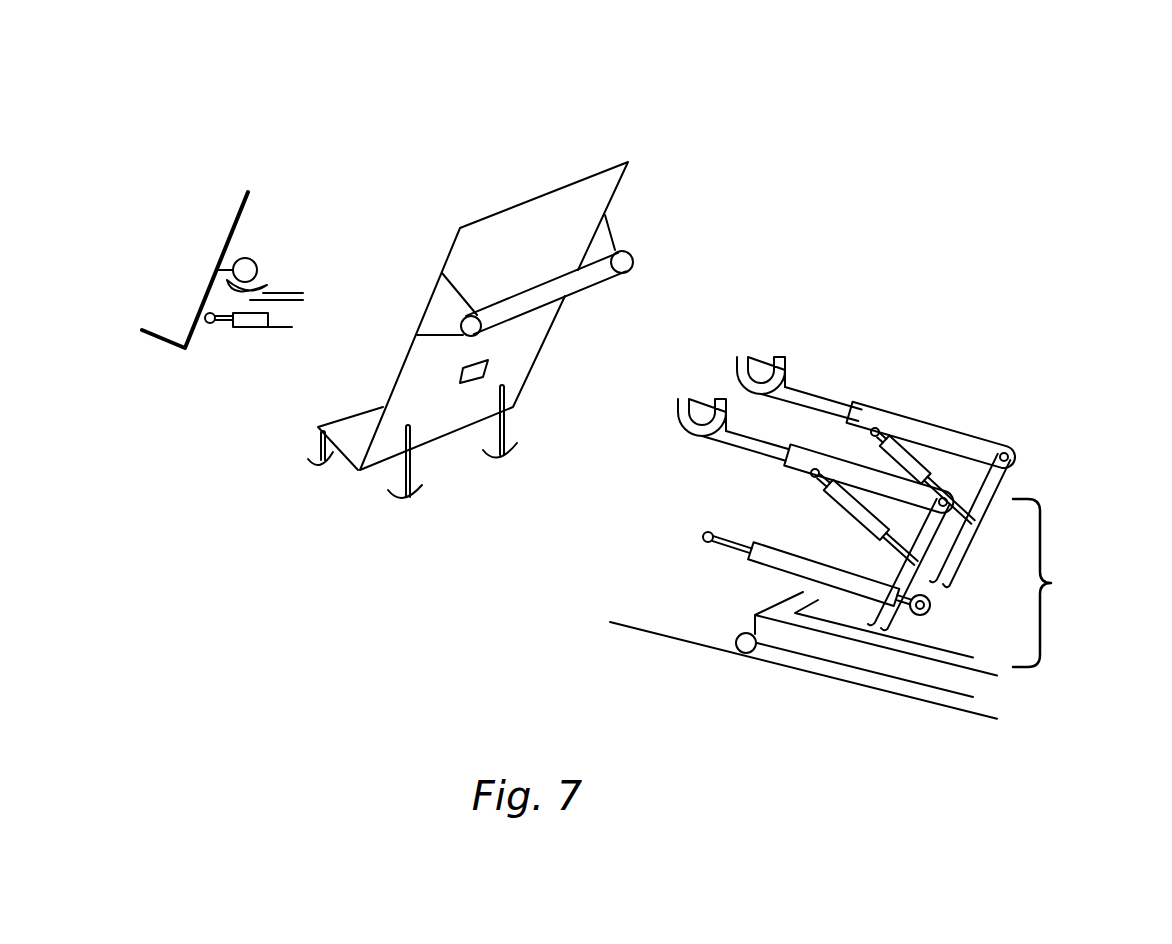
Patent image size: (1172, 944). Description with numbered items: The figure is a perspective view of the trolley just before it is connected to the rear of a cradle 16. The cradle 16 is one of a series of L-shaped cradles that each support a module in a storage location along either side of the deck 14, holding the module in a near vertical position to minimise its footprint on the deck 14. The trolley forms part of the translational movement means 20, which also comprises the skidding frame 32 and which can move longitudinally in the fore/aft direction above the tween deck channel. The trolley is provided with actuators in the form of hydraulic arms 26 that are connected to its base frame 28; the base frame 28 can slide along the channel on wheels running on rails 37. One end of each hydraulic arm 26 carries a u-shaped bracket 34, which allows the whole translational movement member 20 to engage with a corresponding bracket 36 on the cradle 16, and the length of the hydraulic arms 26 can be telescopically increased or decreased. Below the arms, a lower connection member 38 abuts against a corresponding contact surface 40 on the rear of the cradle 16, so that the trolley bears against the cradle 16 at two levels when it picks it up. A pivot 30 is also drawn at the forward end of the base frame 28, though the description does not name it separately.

The deck 14 is at (732, 753).
The cradle 16 is at (240, 210).
The translational movement means 20 is at (1017, 438).
The hydraulic arm 26 is at (885, 417).
The base frame 28 is at (1043, 572).
The pivot 30 is at (745, 644).
The skidding frame 32 is at (918, 695).
The u-shaped bracket 34 is at (282, 295).
The bracket 36 is at (248, 270).
The rail 37 is at (641, 677).
The lower connection member 38 is at (252, 322).
The contact surface 40 is at (462, 383).